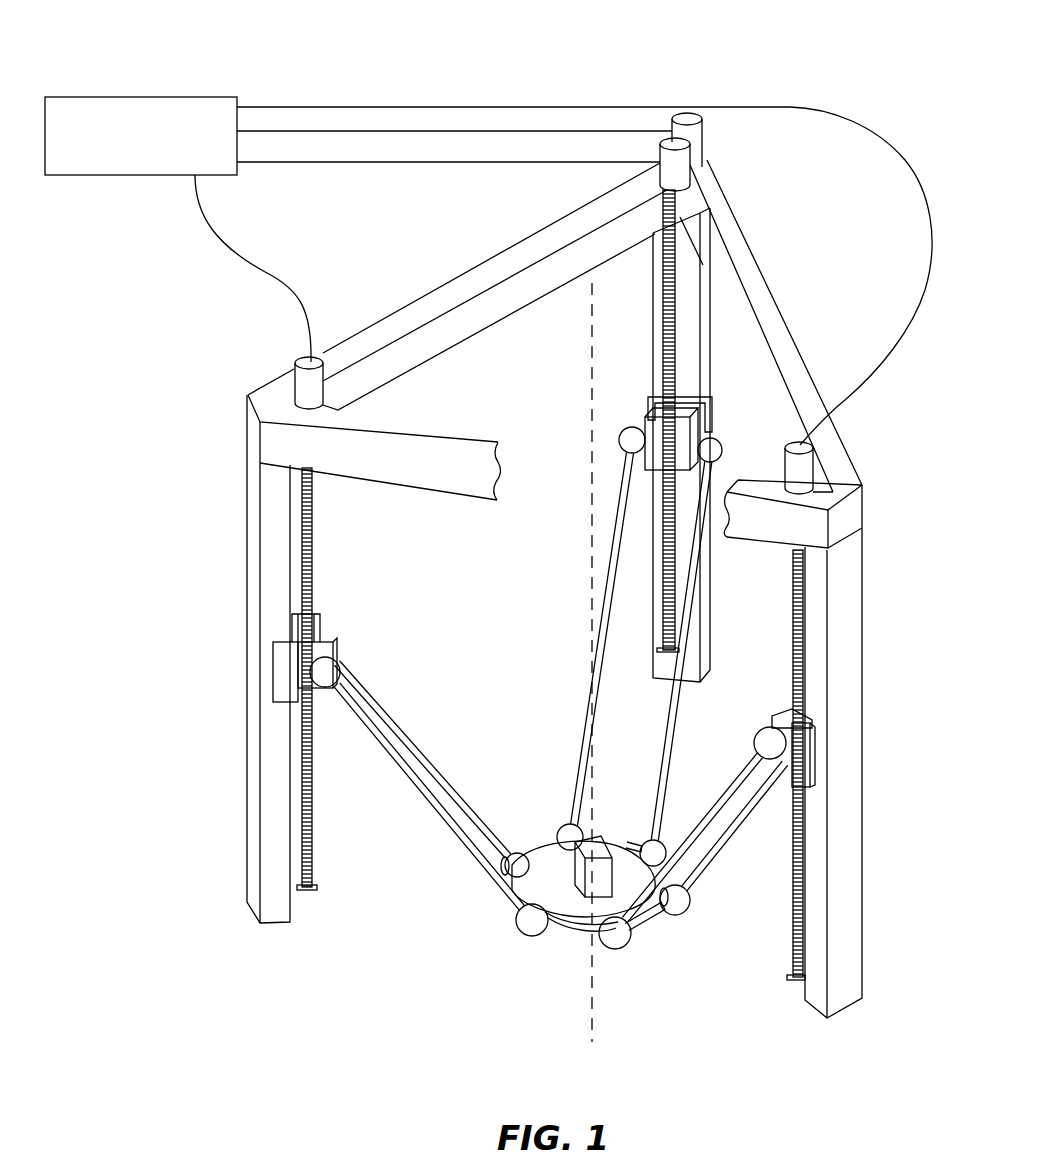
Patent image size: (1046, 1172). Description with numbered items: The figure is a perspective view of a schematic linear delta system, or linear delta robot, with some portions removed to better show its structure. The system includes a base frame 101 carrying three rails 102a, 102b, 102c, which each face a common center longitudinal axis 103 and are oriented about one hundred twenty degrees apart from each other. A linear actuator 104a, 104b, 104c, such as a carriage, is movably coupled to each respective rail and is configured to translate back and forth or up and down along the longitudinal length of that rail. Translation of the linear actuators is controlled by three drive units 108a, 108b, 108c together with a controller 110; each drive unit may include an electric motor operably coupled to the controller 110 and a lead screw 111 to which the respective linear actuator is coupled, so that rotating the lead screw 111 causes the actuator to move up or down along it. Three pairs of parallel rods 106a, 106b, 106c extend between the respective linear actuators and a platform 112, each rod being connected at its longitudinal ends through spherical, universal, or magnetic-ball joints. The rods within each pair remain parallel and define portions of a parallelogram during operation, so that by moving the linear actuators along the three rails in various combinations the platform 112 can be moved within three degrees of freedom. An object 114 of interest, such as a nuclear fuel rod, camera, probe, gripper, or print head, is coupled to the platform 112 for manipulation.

The base frame 101 is at (782, 334).
The rail 102a is at (697, 657).
The rail 102b is at (845, 762).
The rail 102c is at (270, 600).
The center longitudinal axis 103 is at (595, 1020).
The linear actuator 104a is at (688, 422).
The linear actuator 104b is at (808, 718).
The linear actuator 104c is at (331, 649).
The pair of parallel rods 106a is at (665, 765).
The pair of parallel rods 106b is at (725, 847).
The pair of parallel rods 106c is at (425, 768).
The drive unit 108a is at (690, 157).
The drive unit 108b is at (800, 478).
The drive unit 108c is at (307, 383).
The controller 110 is at (135, 97).
The lead screw 111 is at (682, 208).
The platform 112 is at (582, 926).
The object 114 is at (580, 867).